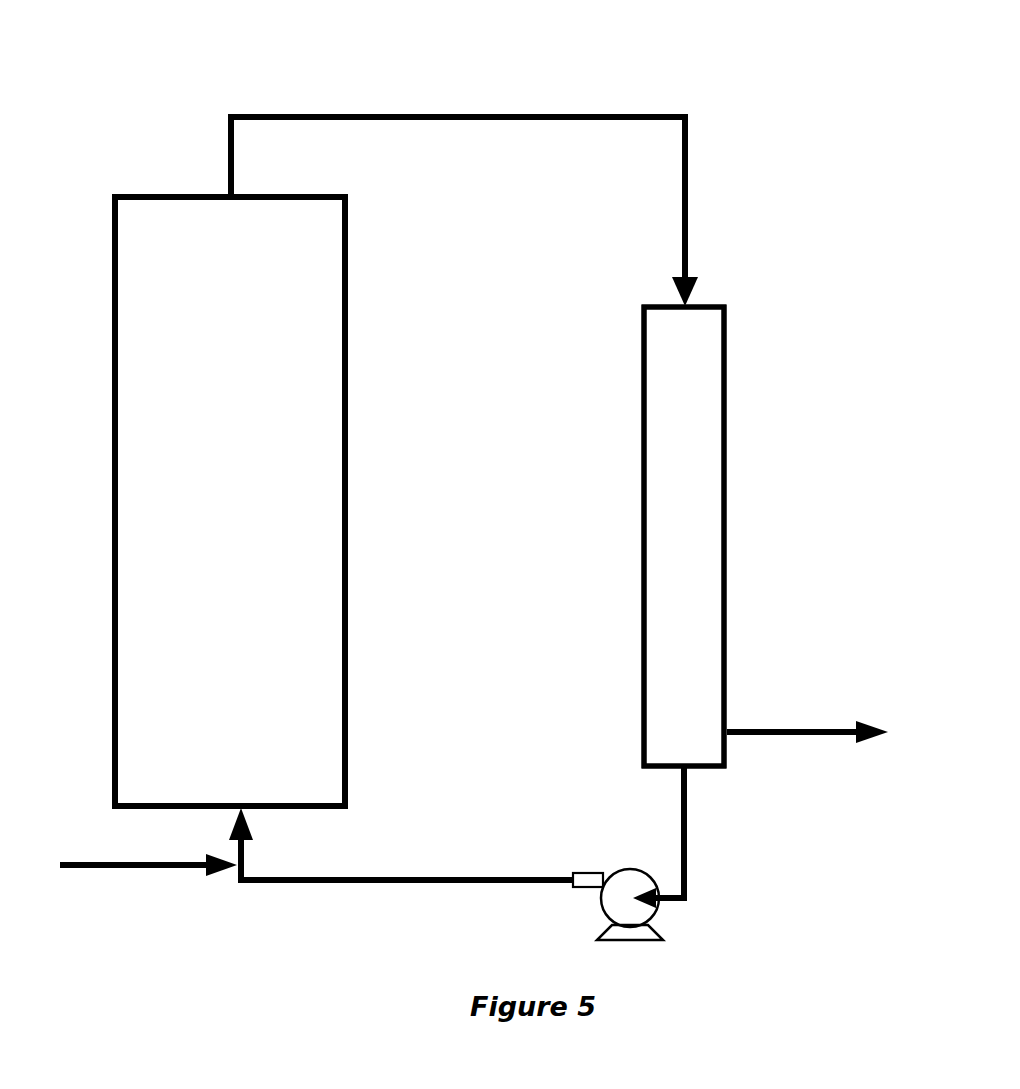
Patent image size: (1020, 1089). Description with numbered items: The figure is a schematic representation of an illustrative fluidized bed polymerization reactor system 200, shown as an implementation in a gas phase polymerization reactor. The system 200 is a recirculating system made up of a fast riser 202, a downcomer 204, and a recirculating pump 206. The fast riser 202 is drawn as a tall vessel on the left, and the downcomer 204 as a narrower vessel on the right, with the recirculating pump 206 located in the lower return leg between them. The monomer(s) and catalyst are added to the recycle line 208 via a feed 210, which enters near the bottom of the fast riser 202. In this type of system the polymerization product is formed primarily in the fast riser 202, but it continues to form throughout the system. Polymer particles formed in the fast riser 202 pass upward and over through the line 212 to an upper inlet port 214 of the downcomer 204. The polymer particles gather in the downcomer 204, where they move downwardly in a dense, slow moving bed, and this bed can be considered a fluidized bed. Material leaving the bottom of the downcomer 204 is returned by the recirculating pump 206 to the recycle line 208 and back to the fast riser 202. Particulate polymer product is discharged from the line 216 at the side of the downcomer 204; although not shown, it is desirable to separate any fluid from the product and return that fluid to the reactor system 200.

The fluidized bed polymerization reactor system 200 is at (136, 131).
The fast riser 202 is at (112, 312).
The downcomer 204 is at (727, 490).
The recirculating pump 206 is at (632, 870).
The recycle line 208 is at (347, 883).
The feed 210 is at (140, 868).
The line 212 is at (608, 113).
The upper inlet port 214 is at (688, 305).
The line 216 is at (788, 735).